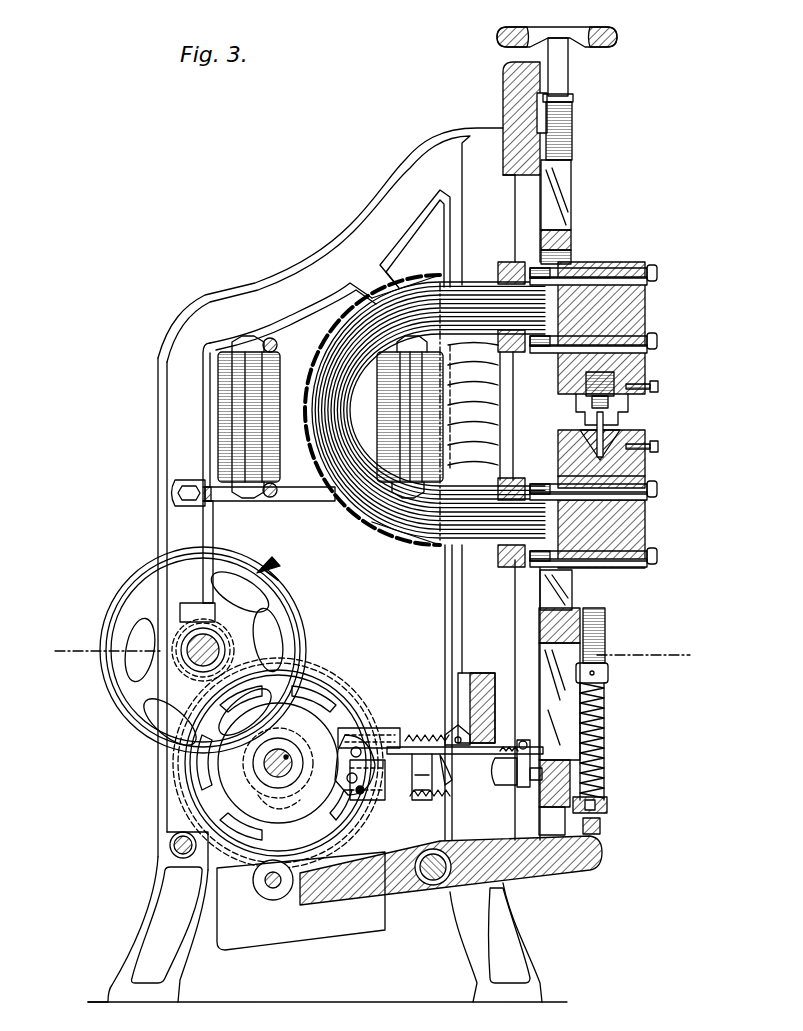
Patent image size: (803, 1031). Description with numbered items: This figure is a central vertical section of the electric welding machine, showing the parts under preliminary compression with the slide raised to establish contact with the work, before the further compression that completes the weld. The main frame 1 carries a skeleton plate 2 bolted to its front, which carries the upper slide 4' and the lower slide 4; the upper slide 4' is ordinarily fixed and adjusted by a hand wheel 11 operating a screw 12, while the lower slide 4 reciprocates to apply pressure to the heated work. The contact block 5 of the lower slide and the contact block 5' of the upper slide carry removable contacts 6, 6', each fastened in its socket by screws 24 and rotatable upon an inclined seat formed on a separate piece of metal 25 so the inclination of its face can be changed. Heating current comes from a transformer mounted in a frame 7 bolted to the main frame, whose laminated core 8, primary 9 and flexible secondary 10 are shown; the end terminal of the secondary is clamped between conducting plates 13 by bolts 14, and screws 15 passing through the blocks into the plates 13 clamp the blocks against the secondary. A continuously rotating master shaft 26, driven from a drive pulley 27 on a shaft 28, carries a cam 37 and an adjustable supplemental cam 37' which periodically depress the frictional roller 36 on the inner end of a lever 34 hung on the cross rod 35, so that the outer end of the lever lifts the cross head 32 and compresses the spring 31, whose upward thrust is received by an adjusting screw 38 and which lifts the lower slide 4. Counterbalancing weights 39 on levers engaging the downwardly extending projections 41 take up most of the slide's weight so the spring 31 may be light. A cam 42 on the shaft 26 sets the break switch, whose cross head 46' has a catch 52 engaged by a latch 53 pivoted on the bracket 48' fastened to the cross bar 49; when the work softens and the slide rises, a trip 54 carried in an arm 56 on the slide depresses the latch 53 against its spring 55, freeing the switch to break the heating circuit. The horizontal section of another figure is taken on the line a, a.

The main frame 1 is at (327, 565).
The skeleton plate 2 is at (505, 96).
The lower slide 4 is at (582, 688).
The upper slide 4' is at (573, 212).
The contact block for the lower slide 5 is at (613, 499).
The contact block for the upper slide 5' is at (605, 328).
The lower contact 6 is at (631, 427).
The upper contact 6' is at (639, 376).
The transformer frame 7 is at (306, 503).
The laminated core 8 is at (232, 393).
The primary 9 is at (372, 290).
The flexible secondary 10 is at (476, 300).
The hand wheel 11 is at (618, 38).
The screw 12 is at (573, 120).
The plates of good conducting material 13 is at (494, 262).
The bolts 14 is at (515, 264).
The bolts or screws 15 is at (658, 270).
The screws 24 is at (659, 386).
The separate piece of metal 25 is at (646, 476).
The main or master shaft 26 is at (285, 758).
The drive pulley 27 is at (297, 615).
The shaft 28 is at (200, 655).
The spring 31 is at (606, 738).
The cross head 32 is at (607, 813).
The lever 34 is at (556, 878).
The cross rod 35 is at (432, 882).
The frictional roller 36 is at (272, 892).
The cam 37 is at (278, 763).
The supplemental cam 37' is at (370, 787).
The screw 38 is at (608, 672).
The weights 39 is at (322, 944).
The downwardly extending projections 41 is at (540, 824).
The cam 42 is at (300, 800).
The cross head for the break switch 46' is at (370, 696).
The bracket of the break switch 48' is at (431, 706).
The cross bar 49 is at (500, 680).
The catch 52 is at (390, 745).
The latch 53 is at (450, 775).
The trip 54 is at (522, 788).
The spring 55 is at (448, 735).
The arm 56 is at (543, 775).
The section line a a is at (369, 653).